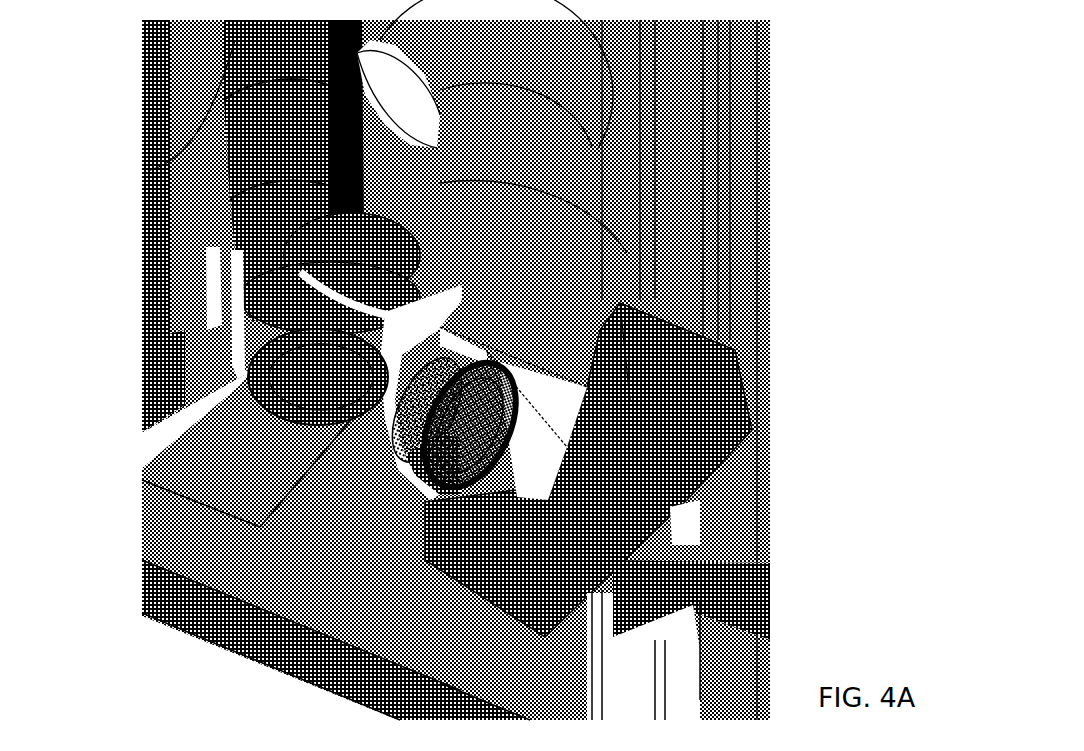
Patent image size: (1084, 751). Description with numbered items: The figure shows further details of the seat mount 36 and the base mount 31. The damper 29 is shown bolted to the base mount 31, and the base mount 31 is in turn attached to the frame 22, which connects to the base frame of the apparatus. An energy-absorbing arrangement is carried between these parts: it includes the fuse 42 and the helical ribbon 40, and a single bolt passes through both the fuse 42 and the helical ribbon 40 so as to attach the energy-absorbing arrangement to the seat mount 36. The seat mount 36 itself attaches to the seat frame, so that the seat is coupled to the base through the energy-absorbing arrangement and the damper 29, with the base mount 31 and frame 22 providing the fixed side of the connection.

The helical ribbon 40 is at (176, 166).
The damper 29 is at (557, 155).
The frame 22 is at (560, 345).
The base mount 31 is at (710, 336).
The seat mount 36 is at (210, 460).
The fuse 42 is at (311, 423).